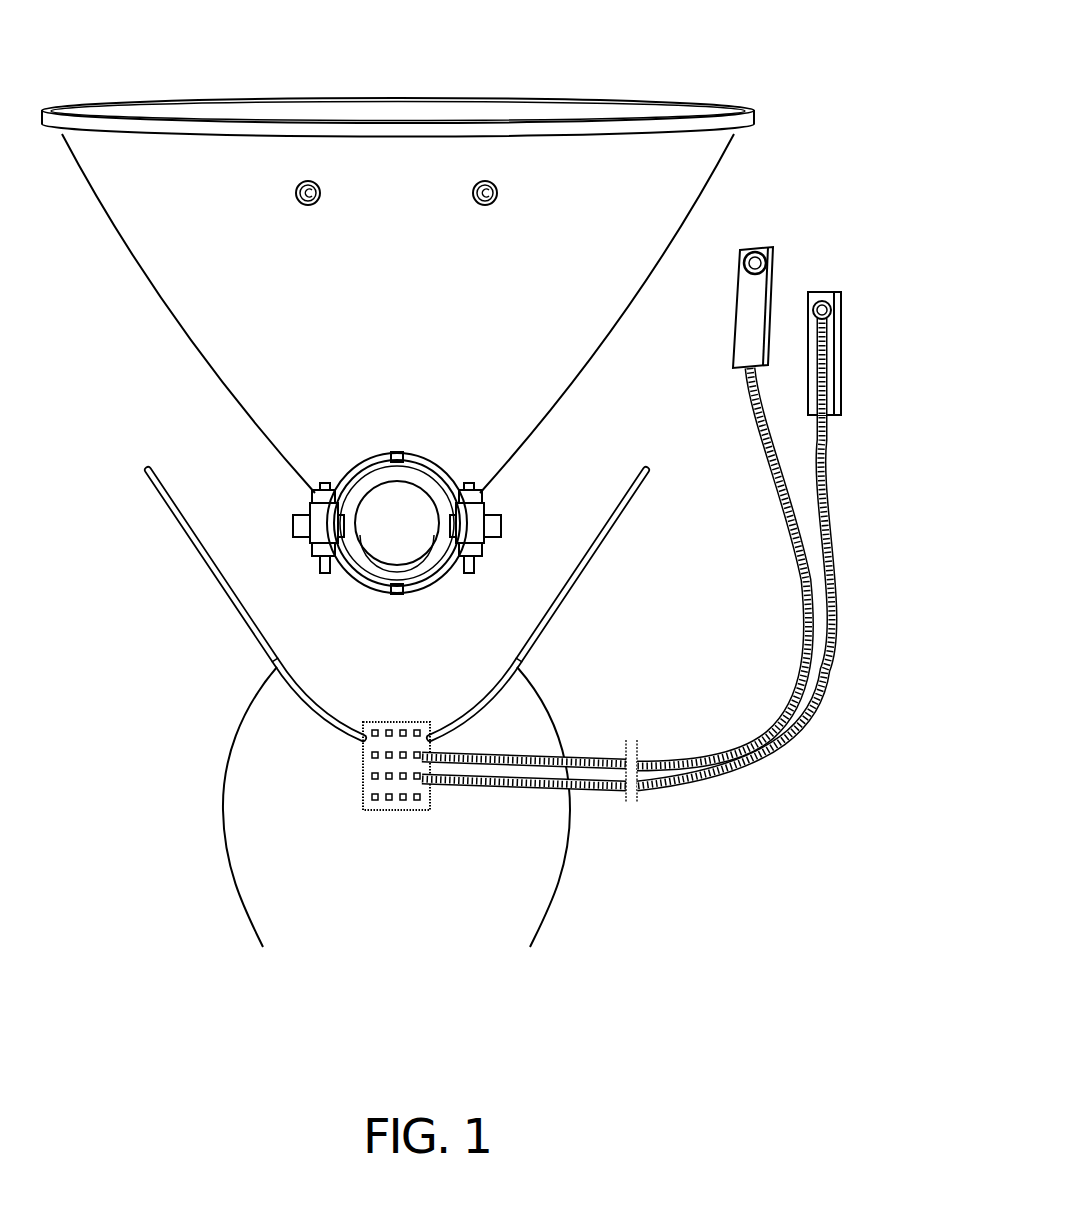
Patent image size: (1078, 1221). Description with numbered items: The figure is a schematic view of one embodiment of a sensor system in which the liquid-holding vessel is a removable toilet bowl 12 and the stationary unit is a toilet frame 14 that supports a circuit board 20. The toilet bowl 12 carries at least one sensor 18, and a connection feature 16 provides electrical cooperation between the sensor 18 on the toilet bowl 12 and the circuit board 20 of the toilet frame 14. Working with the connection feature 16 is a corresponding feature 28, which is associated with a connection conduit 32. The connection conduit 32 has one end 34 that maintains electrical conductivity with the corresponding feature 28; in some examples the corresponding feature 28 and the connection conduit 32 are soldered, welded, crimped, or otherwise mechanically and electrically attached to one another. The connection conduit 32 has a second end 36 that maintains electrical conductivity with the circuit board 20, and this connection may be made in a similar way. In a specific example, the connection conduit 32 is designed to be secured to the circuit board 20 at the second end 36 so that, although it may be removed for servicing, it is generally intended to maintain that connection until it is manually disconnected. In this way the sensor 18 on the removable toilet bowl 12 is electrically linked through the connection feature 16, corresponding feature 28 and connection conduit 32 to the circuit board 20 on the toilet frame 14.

The removable toilet bowl 12 is at (565, 108).
The toilet frame 14 is at (263, 723).
The connection feature 16 is at (851, 482).
The sensor 18 is at (485, 181).
The circuit board 20 is at (388, 722).
The corresponding feature 28 is at (750, 262).
The connection conduit 32 is at (800, 572).
The end of connection conduit 34 is at (832, 312).
The second end of connection conduit 36 is at (430, 797).